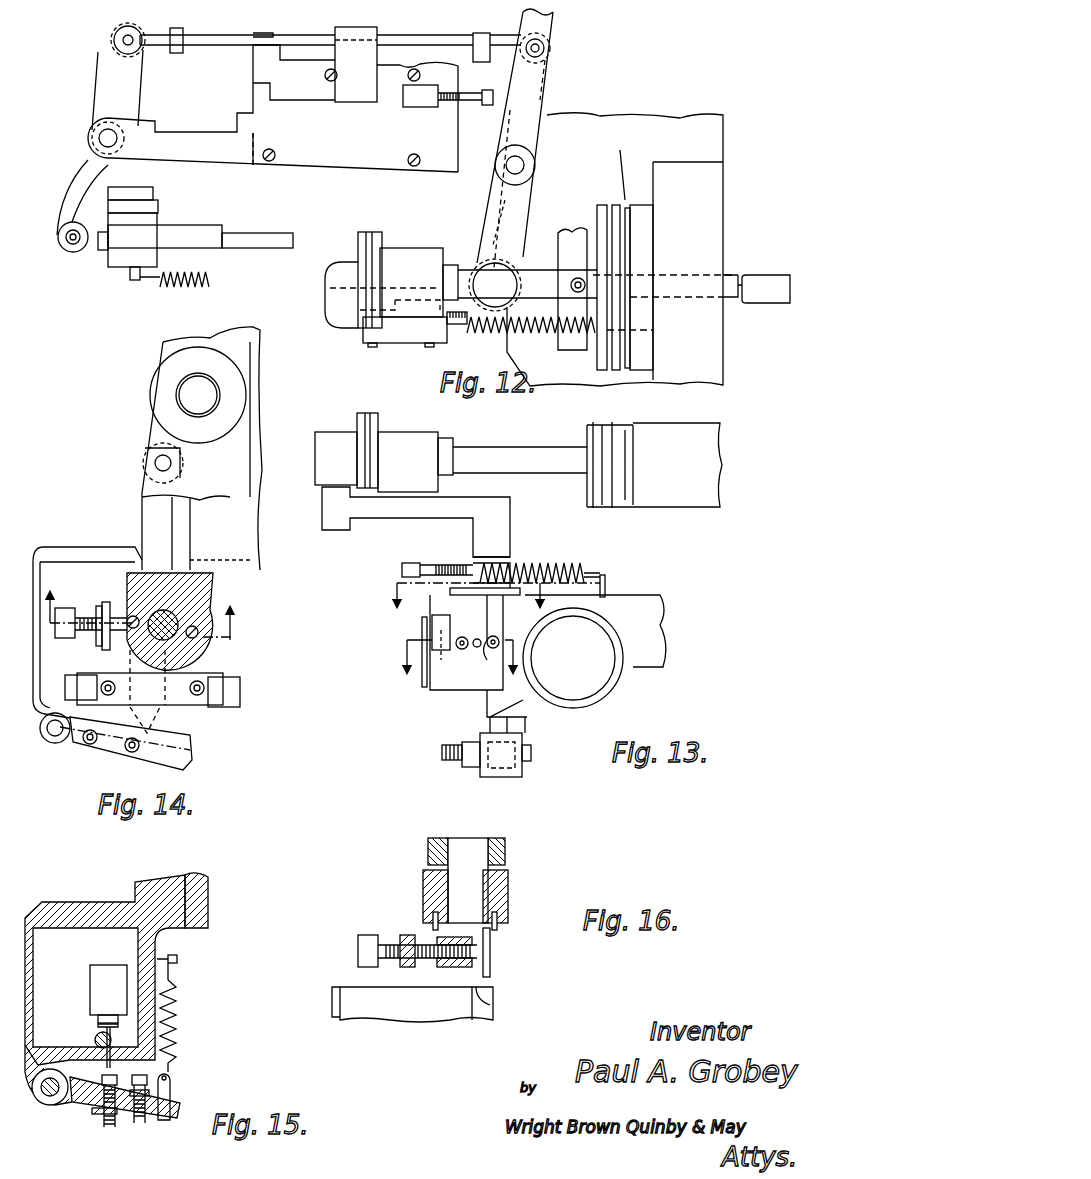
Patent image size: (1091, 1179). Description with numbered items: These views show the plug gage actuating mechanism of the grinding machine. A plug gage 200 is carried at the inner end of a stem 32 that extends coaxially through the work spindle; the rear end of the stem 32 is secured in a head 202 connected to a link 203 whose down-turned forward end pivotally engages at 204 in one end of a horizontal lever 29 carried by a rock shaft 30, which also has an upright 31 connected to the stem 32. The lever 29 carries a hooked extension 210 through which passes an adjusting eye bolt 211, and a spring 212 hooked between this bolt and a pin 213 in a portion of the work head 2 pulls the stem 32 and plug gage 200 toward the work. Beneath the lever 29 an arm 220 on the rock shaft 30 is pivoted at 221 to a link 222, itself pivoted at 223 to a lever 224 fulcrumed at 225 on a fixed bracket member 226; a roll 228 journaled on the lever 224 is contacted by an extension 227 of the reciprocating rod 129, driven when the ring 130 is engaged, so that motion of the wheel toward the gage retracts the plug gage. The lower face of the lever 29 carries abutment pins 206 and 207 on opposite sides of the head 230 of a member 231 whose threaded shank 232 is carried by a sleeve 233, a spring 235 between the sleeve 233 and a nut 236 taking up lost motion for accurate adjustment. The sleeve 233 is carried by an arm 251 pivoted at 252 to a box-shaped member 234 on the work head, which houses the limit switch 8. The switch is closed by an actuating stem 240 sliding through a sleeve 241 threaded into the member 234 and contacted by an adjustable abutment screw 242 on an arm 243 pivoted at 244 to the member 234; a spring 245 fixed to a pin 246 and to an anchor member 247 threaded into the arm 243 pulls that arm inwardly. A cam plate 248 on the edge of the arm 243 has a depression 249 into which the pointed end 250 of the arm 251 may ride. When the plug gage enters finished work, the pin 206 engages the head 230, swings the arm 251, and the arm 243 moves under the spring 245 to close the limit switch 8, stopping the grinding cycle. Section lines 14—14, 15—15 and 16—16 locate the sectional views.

In FIG. 12, the housing 2 is at (718, 172).
In FIG. 13, the housing 2 is at (700, 462).
In FIG. 15, the switch LS8 8 is at (108, 994).
In FIG. 13, the section line 14— 14 is at (486, 574).
In FIG. 13, the section line 15— 15 is at (468, 652).
In FIG. 14, the section line 16— 16 is at (154, 610).
In FIG. 12, the horizontal lever 29 is at (522, 205).
In FIG. 13, the horizontal lever 29 is at (505, 563).
In FIG. 14, the horizontal lever 29 is at (222, 468).
In FIG. 16, the horizontal lever 29 is at (510, 890).
In FIG. 12, the rock shaft 30 is at (518, 165).
In FIG. 14, the rock shaft 30 is at (205, 400).
In FIG. 13, the upright 31 is at (324, 505).
In FIG. 12, the stem 32 is at (684, 272).
In FIG. 13, the stem 32 is at (503, 455).
In FIG. 12, the rod 129 is at (243, 242).
In FIG. 12, the ring 130 is at (158, 204).
In FIG. 12, the plug gage 200 is at (770, 305).
In FIG. 13, the head 202 is at (408, 438).
In FIG. 13, the link 203 is at (410, 500).
In FIG. 16, the link 203 is at (506, 860).
In FIG. 13, the pivot 204 is at (489, 552).
In FIG. 14, the pivot 204 is at (198, 570).
In FIG. 16, the pivot 204 is at (465, 880).
In FIG. 14, the abutment pin 206 is at (135, 595).
In FIG. 16, the abutment pin 206 is at (432, 922).
In FIG. 14, the abutment pin 207 is at (214, 600).
In FIG. 16, the abutment pin 207 is at (500, 920).
In FIG. 12, the hooked extension 210 is at (452, 262).
In FIG. 13, the hooked extension 210 is at (416, 563).
In FIG. 12, the adjusting eye bolt 211 is at (452, 324).
In FIG. 13, the adjusting eye bolt 211 is at (452, 565).
In FIG. 12, the spring 212 is at (512, 318).
In FIG. 13, the spring 212 is at (588, 572).
In FIG. 12, the pin 213 is at (633, 327).
In FIG. 13, the pin 213 is at (605, 577).
In FIG. 12, the arm 220 is at (540, 80).
In FIG. 13, the arm 220 is at (522, 748).
In FIG. 12, the pivot 221 is at (550, 46).
In FIG. 12, the link 222 is at (328, 24).
In FIG. 13, the link 222 is at (450, 760).
In FIG. 12, the pivot 223 is at (116, 43).
In FIG. 12, the lever 224 is at (96, 98).
In FIG. 12, the fulcrum 225 is at (118, 134).
In FIG. 12, the fixed bracket member 226 is at (237, 160).
In FIG. 12, the extension 227 is at (103, 250).
In FIG. 12, the roll 228 is at (68, 252).
In FIG. 12, the head 230 is at (472, 105).
In FIG. 16, the head 230 is at (492, 946).
In FIG. 16, the member 231 is at (490, 1010).
In FIG. 13, the threaded shank 232 is at (441, 637).
In FIG. 14, the threaded shank 232 is at (96, 614).
In FIG. 16, the threaded shank 232 is at (430, 967).
In FIG. 14, the sleeve 233 is at (118, 648).
In FIG. 16, the sleeve 233 is at (455, 967).
In FIG. 14, the box-shaped member 234 is at (68, 552).
In FIG. 15, the box-shaped member 234 is at (92, 904).
In FIG. 16, the box-shaped member 234 is at (333, 1012).
In FIG. 16, the spring 235 is at (417, 967).
In FIG. 16, the nut 236 is at (405, 967).
In FIG. 15, the actuating stem 240 is at (98, 1026).
In FIG. 15, the sleeve 241 is at (95, 1044).
In FIG. 13, the adjustable abutment screw 242 is at (460, 650).
In FIG. 15, the adjustable abutment screw 242 is at (110, 1127).
In FIG. 13, the arm 243 is at (460, 610).
In FIG. 15, the arm 243 is at (160, 1118).
In FIG. 14, the pivot 244 is at (50, 744).
In FIG. 15, the pivot 244 is at (48, 1103).
In FIG. 15, the spring 245 is at (176, 1042).
In FIG. 15, the pin 246 is at (178, 962).
In FIG. 13, the anchor member 247 is at (495, 640).
In FIG. 15, the anchor member 247 is at (172, 1082).
In FIG. 14, the cam plate 248 is at (186, 750).
In FIG. 15, the cam plate 248 is at (162, 1074).
In FIG. 14, the depression 249 is at (177, 730).
In FIG. 14, the pointed end 250 is at (240, 696).
In FIG. 14, the arm 251 is at (154, 528).
In FIG. 14, the pivot 252 is at (142, 464).